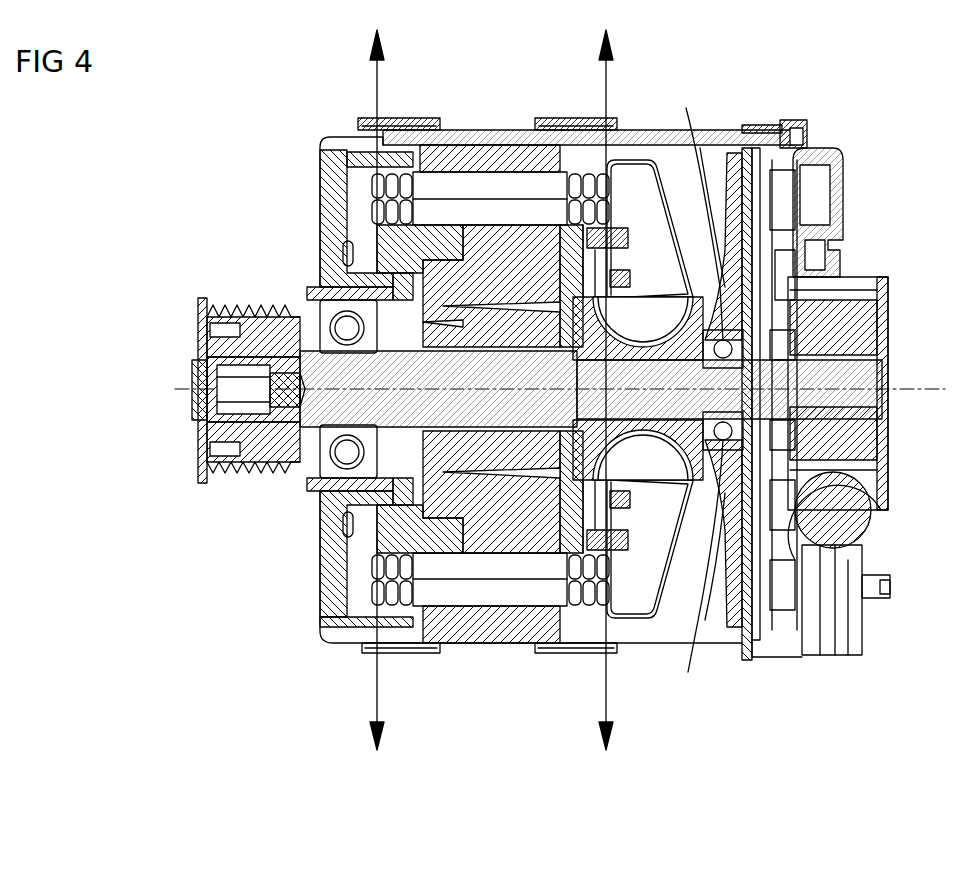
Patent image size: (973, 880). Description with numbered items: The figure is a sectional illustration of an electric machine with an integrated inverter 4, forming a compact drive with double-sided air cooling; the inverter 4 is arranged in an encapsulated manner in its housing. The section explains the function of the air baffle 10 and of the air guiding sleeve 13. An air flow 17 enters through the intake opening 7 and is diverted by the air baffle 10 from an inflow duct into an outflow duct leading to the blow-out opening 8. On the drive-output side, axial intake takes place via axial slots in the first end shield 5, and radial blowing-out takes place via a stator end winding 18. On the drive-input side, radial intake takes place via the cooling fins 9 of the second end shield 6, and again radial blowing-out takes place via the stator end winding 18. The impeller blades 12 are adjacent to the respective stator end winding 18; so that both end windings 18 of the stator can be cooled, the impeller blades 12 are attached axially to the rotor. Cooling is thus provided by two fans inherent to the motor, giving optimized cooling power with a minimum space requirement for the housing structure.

The inverter 4 is at (860, 432).
The first end shield 5 is at (790, 452).
The second end shield 6 is at (795, 180).
The intake opening 7 is at (330, 275).
The blow-out opening 8 is at (375, 118).
The cooling fins 9 is at (713, 183).
The air baffle 10 is at (674, 185).
The impeller blades 12 is at (548, 645).
The air guiding sleeve 13 is at (790, 370).
The air flow 17 is at (378, 86).
The stator end winding 18 is at (578, 625).